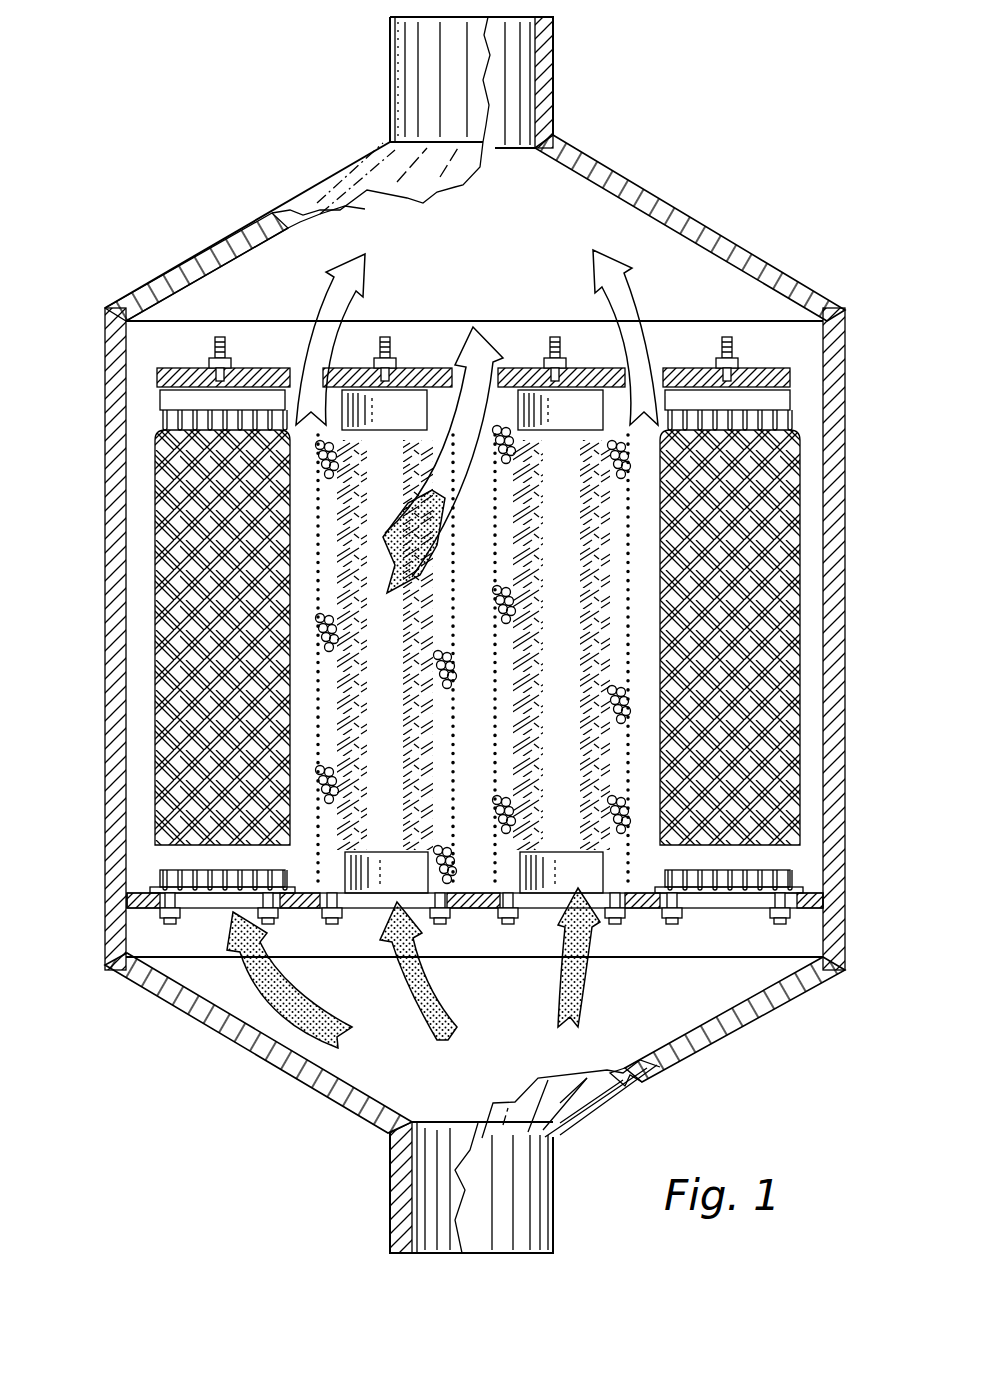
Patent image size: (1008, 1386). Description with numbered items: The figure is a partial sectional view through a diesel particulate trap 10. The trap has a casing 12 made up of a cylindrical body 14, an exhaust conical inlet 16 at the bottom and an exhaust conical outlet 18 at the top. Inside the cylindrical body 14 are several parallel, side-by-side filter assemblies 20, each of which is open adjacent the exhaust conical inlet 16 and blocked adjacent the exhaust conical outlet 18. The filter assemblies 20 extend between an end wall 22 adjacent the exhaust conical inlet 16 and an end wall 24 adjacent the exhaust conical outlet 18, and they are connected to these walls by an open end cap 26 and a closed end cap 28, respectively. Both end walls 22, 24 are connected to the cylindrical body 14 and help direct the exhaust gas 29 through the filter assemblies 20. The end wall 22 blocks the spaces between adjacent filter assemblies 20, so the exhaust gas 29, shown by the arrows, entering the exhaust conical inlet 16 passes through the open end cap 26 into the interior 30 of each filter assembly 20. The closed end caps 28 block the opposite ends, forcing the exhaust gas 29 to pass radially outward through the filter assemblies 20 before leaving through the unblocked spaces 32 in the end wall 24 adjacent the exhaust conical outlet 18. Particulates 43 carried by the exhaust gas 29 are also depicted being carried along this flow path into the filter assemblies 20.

The diesel particulate trap 10 is at (471, 635).
The casing 12 is at (174, 254).
The cylindrical body 14 is at (847, 637).
The exhaust conical inlet 16 is at (727, 1038).
The exhaust conical outlet 18 is at (713, 232).
The filter assemblies 20 is at (150, 528).
The end wall 22 is at (150, 912).
The end wall 24 is at (186, 370).
The open end cap 26 is at (182, 878).
The closed end cap 28 is at (190, 398).
The exhaust gas 29 is at (364, 248).
The interior 30 is at (396, 727).
The unblocked spaces 32 is at (143, 376).
The particulates 43 is at (400, 530).